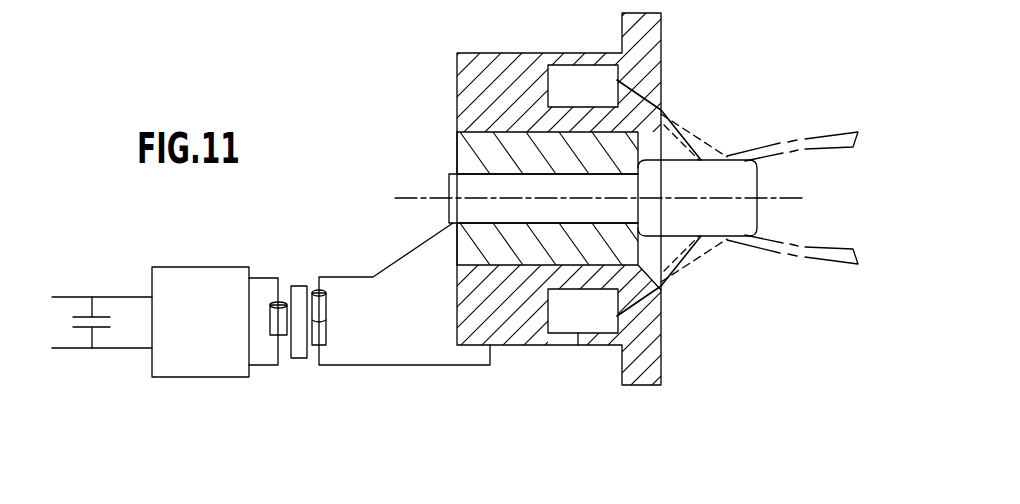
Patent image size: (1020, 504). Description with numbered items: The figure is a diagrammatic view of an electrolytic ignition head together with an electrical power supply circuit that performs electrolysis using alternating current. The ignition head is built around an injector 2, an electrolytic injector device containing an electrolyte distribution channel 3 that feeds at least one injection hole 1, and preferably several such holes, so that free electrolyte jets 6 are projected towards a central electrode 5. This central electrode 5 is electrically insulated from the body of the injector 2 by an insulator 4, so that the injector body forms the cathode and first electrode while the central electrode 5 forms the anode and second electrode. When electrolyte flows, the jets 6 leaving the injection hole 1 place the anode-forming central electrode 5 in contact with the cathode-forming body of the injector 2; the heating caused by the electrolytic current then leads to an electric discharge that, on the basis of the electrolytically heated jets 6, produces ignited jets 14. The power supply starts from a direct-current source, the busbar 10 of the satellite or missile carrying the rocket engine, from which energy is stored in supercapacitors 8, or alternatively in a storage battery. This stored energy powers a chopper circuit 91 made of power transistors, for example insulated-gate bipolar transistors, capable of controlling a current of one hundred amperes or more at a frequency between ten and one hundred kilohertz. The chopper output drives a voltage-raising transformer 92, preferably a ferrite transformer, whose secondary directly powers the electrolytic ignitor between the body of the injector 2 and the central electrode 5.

The injection hole 1 is at (658, 114).
The injector 2 is at (473, 100).
The electrolyte distribution channel 3 is at (575, 88).
The insulator 4 is at (472, 148).
The central electrode 5 is at (457, 188).
The electrolyte jet 6 is at (697, 255).
The supercapacitor 8 is at (102, 315).
The busbar 10 is at (68, 296).
The ignited jet 14 is at (829, 139).
The chopper circuit 91 is at (188, 288).
The voltage-raising transformer 92 is at (296, 280).